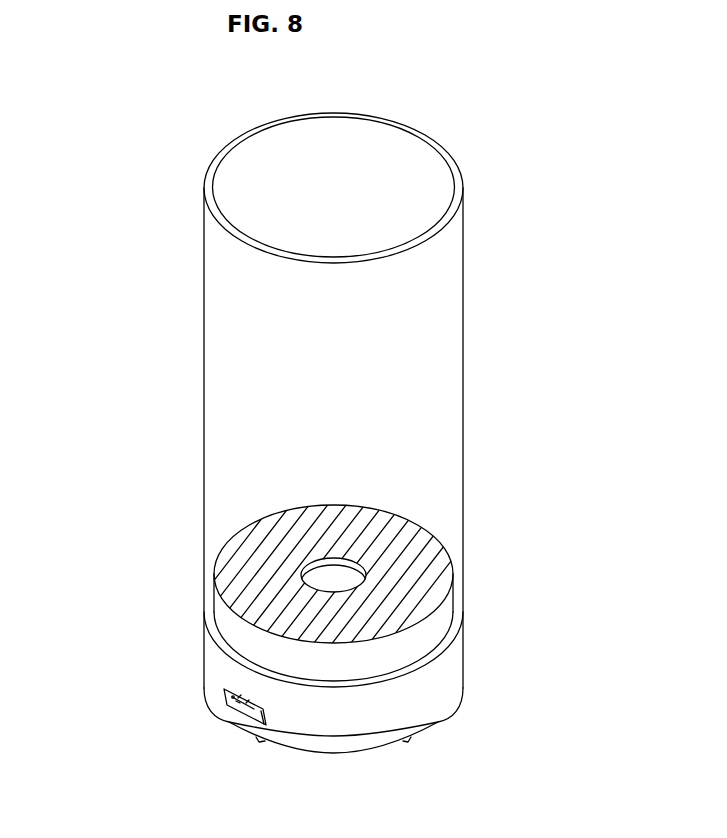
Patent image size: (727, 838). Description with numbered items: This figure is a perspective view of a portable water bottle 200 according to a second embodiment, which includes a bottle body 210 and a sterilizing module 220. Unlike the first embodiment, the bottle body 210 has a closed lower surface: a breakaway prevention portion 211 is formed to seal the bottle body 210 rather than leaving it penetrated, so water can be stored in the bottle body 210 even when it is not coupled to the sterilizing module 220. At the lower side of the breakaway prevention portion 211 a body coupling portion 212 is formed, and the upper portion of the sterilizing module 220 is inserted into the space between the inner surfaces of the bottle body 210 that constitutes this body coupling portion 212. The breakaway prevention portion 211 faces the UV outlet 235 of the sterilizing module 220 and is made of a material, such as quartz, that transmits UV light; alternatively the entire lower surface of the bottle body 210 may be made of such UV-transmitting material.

The portable water bottle 200 is at (119, 95).
The bottle body 210 is at (454, 343).
The breakaway prevention portion 211 is at (437, 547).
The body coupling portion 212 is at (437, 625).
The sterilizing module 220 is at (447, 666).
The UV outlet 235 is at (333, 578).